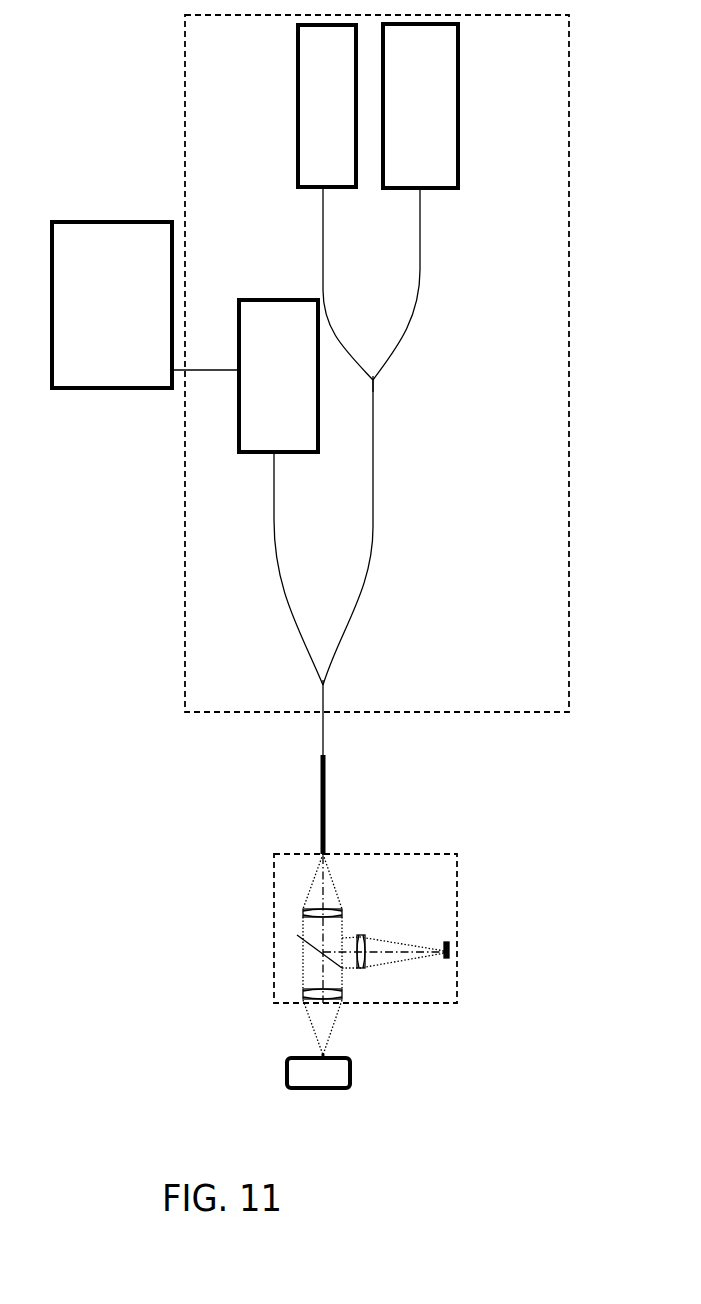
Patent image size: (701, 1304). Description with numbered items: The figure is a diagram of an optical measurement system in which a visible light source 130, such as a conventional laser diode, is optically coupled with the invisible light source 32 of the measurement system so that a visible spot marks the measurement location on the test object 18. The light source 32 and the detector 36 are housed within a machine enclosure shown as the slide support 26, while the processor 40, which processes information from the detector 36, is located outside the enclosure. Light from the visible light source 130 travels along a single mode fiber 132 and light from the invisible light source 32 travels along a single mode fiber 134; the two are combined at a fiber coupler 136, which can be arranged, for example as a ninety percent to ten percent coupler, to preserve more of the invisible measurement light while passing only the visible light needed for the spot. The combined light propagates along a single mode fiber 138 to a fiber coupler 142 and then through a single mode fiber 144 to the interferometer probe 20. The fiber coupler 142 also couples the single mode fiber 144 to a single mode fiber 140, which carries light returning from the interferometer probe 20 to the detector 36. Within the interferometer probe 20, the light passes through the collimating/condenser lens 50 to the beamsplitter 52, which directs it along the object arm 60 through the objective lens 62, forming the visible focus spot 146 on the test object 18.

The test object 18 is at (350, 1075).
The interferometer probe 20 is at (457, 895).
The slide support 26 is at (185, 140).
The light source 32 is at (435, 102).
The detector 36 is at (293, 382).
The processor 40 is at (127, 301).
The collimating/condenser lens 50 is at (303, 914).
The beamsplitter 52 is at (300, 948).
The object arm 60 is at (306, 1018).
The objective lens 62 is at (305, 996).
The visible light source 130 is at (298, 100).
The single mode fiber 132 is at (322, 268).
The single mode fiber 134 is at (423, 238).
The fiber coupler 136 is at (375, 382).
The single mode fiber 138 is at (375, 525).
The single mode fiber 140 is at (282, 598).
The fiber coupler 142 is at (323, 687).
The single mode fiber 144 is at (325, 772).
The visible focus spot 146 is at (323, 1054).